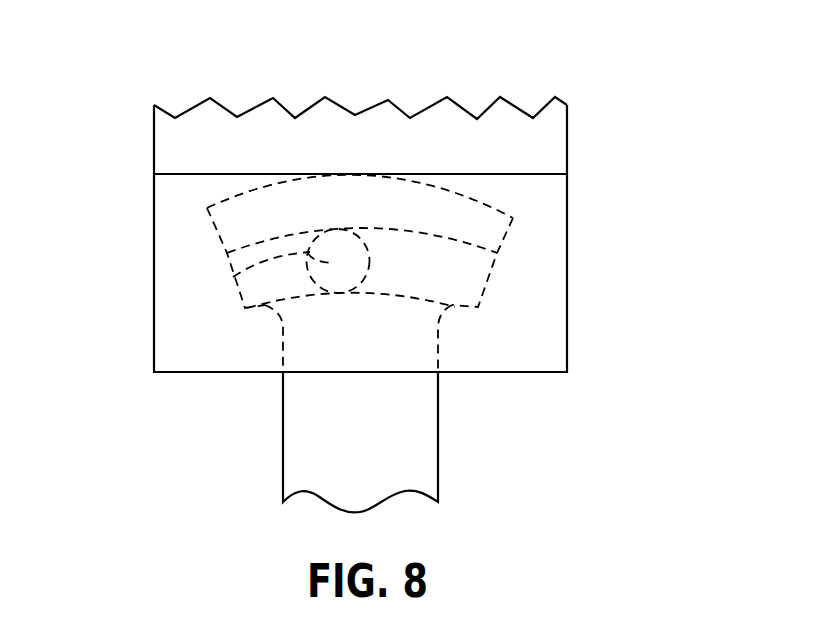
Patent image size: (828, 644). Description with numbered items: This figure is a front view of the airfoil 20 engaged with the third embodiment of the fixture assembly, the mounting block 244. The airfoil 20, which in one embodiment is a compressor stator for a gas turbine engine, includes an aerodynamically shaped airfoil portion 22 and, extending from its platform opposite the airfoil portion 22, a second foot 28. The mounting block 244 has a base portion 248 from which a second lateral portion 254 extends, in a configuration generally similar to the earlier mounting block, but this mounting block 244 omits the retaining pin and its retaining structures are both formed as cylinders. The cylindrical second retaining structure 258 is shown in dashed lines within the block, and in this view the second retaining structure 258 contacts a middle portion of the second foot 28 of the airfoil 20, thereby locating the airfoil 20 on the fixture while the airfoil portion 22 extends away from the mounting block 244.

The mounting block 244 is at (408, 192).
The base portion 248 is at (379, 121).
The second foot 28 is at (513, 218).
The second retaining structure 258 is at (233, 278).
The second lateral portion 254 is at (543, 319).
The airfoil portion 22 is at (410, 423).
The airfoil 20 is at (395, 442).